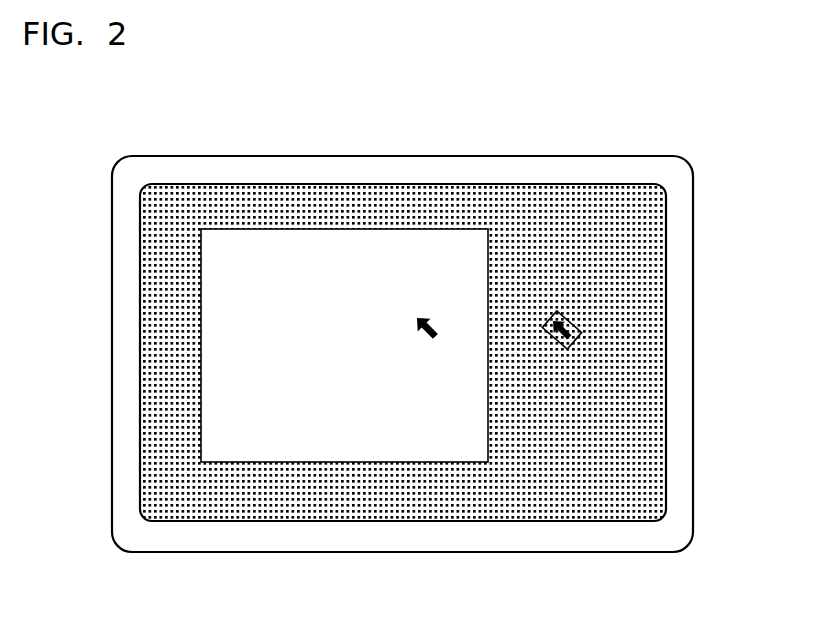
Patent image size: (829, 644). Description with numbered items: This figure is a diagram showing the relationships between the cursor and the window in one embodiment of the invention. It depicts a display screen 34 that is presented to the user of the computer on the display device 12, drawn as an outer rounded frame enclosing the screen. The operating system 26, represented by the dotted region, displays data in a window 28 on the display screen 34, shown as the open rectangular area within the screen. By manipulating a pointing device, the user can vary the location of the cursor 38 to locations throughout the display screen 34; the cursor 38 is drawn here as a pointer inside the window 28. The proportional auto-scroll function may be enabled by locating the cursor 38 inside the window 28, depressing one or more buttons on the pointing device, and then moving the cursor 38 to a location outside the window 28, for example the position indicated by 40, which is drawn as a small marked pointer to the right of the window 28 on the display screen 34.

The display device 12 is at (424, 348).
The display screen 34 is at (145, 182).
The operating system 26 is at (183, 191).
The window 28 is at (308, 228).
The cursor 38 is at (443, 318).
The position 40 is at (585, 321).